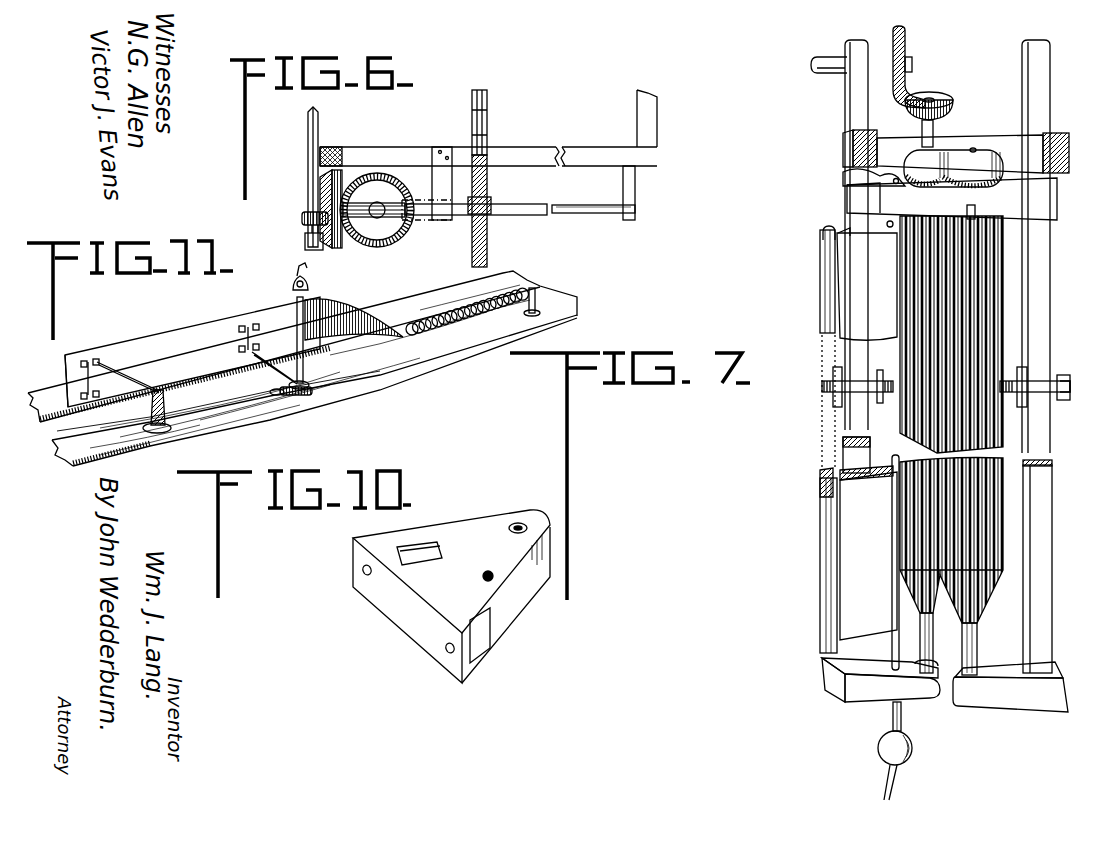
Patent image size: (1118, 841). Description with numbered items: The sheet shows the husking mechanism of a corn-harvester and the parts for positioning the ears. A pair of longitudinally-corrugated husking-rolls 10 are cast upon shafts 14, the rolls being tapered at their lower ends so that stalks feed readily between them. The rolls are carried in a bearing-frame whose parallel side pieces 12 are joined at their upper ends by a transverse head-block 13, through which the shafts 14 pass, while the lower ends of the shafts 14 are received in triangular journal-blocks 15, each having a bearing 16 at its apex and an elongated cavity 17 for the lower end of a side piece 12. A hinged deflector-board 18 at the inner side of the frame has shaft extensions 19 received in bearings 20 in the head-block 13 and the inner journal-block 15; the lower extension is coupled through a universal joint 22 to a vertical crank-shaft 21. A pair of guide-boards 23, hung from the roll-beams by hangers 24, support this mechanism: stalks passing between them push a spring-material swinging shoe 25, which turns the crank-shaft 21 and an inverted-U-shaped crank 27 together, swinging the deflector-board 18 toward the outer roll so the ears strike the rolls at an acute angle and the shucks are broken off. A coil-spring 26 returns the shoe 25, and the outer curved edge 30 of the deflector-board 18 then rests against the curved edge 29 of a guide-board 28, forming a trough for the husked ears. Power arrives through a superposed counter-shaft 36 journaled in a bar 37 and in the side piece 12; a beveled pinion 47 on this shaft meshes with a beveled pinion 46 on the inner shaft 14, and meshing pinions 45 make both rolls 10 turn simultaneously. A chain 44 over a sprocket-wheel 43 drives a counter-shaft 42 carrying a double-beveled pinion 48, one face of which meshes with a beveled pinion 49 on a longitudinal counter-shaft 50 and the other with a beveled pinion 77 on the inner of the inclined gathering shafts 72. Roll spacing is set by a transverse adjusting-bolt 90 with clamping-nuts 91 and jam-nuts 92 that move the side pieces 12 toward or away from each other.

In FIG. 7, the husking-rolls 10 is at (1000, 545).
In FIG. 7, the side pieces 12 is at (843, 460).
In FIG. 7, the head-block 13 is at (1057, 205).
In FIG. 7, the shafts 14 is at (977, 642).
In FIG. 7, the journal-blocks 15 is at (997, 713).
In FIG. 10, the journal-blocks 15 is at (451, 596).
In FIG. 10, the bearing 16 is at (518, 523).
In FIG. 10, the elongated cavity 17 is at (416, 547).
In FIG. 7, the deflector-board 18 is at (867, 436).
In FIG. 7, the shaft extensions 19 is at (892, 645).
In FIG. 7, the bearings 20 is at (847, 175).
In FIG. 10, the bearings 20 is at (488, 571).
In FIG. 7, the crank-shaft 21 is at (896, 780).
In FIG. 11, the crank-shaft 21 is at (297, 367).
In FIG. 7, the universal joint 22 is at (912, 748).
In FIG. 11, the guide-boards 23 is at (392, 372).
In FIG. 11, the hangers 24 is at (354, 319).
In FIG. 11, the swinging shoe 25 is at (192, 352).
In FIG. 11, the coil-spring 26 is at (463, 320).
In FIG. 11, the inverted-U-shaped crank 27 is at (121, 370).
In FIG. 7, the guide-board 28 is at (820, 547).
In FIG. 7, the curved edge 29 is at (820, 480).
In FIG. 7, the outer curved edge 30 is at (846, 480).
In FIG. 7, the superposed counter-shaft 36 is at (830, 72).
In FIG. 7, the bar 37 is at (852, 42).
In FIG. 6, the counter-shaft 42 is at (566, 214).
In FIG. 6, the sprocket-wheel 43 is at (488, 243).
In FIG. 6, the chain 44 is at (488, 118).
In FIG. 7, the pinions 45 is at (970, 186).
In FIG. 7, the beveled pinion 46 is at (940, 101).
In FIG. 7, the beveled pinion 47 is at (907, 80).
In FIG. 6, the double-beveled pinion 48 is at (336, 246).
In FIG. 6, the beveled pinion 49 is at (386, 246).
In FIG. 6, the counter-shaft 50 is at (383, 216).
In FIG. 6, the shafts 72 is at (309, 176).
In FIG. 6, the beveled pinion 77 is at (302, 220).
In FIG. 7, the adjusting-bolt 90 is at (1070, 386).
In FIG. 7, the clamping-nuts 91 is at (1060, 400).
In FIG. 7, the jam-nuts 92 is at (1027, 372).